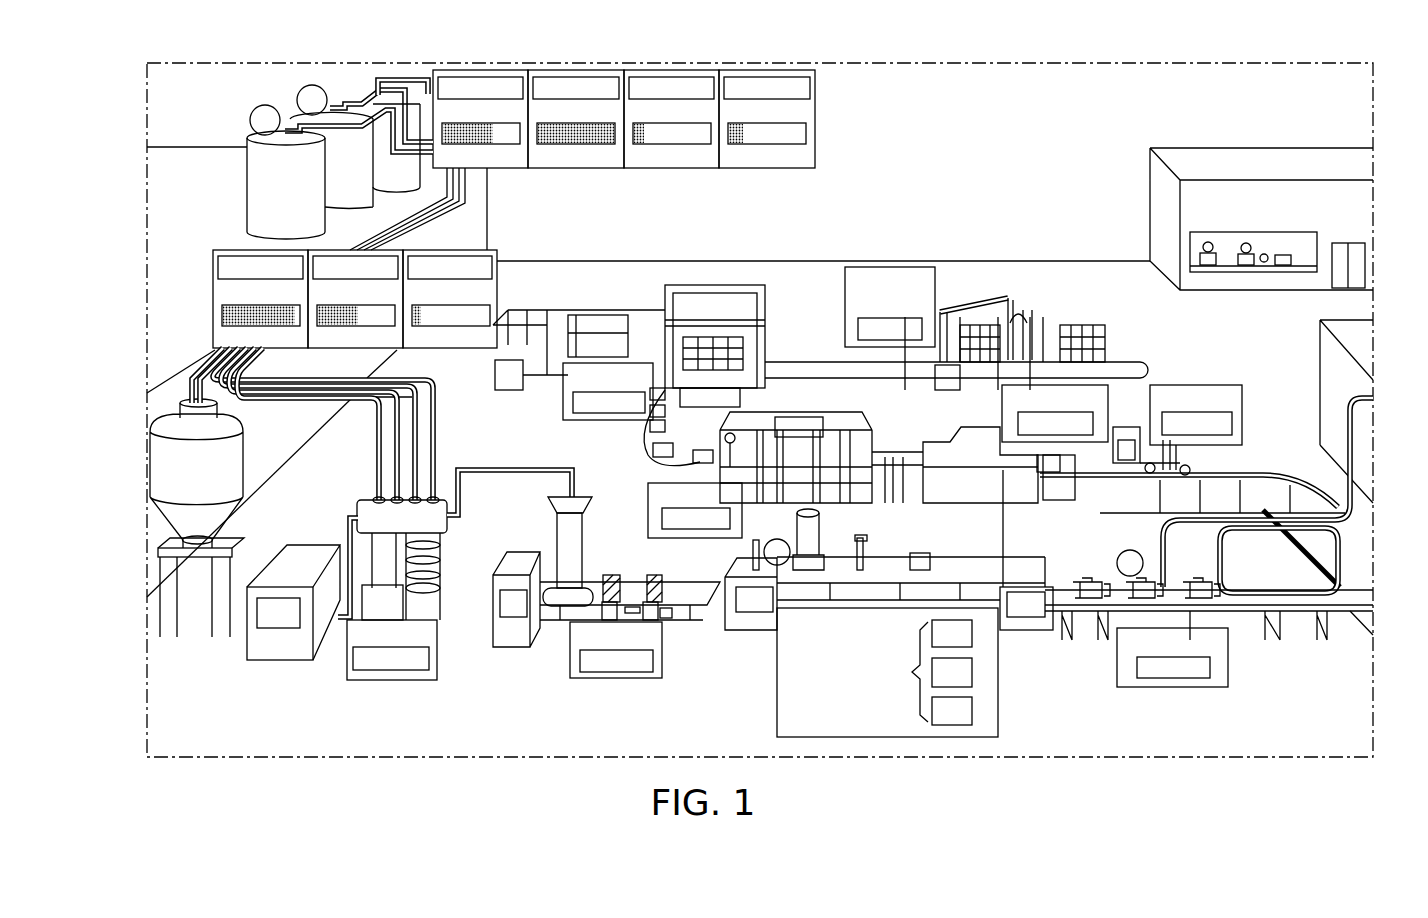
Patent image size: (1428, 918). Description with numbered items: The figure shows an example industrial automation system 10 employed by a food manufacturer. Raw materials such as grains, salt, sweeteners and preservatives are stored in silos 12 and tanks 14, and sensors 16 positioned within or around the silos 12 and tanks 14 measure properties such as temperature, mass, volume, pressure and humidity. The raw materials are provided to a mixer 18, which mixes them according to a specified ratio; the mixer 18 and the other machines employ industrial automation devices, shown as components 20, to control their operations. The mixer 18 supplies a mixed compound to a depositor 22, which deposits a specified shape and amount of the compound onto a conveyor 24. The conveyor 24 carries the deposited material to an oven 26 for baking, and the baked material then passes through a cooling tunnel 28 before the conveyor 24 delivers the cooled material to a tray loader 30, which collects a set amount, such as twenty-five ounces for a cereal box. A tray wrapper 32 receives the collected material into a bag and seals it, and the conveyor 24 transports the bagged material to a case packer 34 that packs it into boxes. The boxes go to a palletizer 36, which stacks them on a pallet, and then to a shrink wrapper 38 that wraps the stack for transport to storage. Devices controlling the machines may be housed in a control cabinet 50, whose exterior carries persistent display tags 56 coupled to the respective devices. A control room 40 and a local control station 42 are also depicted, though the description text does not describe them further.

The industrial automation system 10 is at (893, 40).
The silos 12 is at (362, 93).
The tanks 14 is at (208, 300).
The sensors 16 is at (300, 88).
The mixer 18 is at (440, 630).
The components 20 is at (278, 650).
The depositor 22 is at (672, 624).
The conveyor 24 is at (680, 590).
The oven 26 is at (965, 553).
The cooling tunnel 28 is at (1219, 602).
The tray loader 30 is at (1243, 415).
The tray wrapper 32 is at (995, 405).
The case packer 34 is at (643, 504).
The palletizer 36 is at (553, 406).
The shrink wrapper 38 is at (946, 286).
The control room 40 is at (1261, 254).
The line control system display 42 is at (265, 628).
The control cabinet 50 is at (999, 716).
The persistent display tags 56 is at (920, 672).